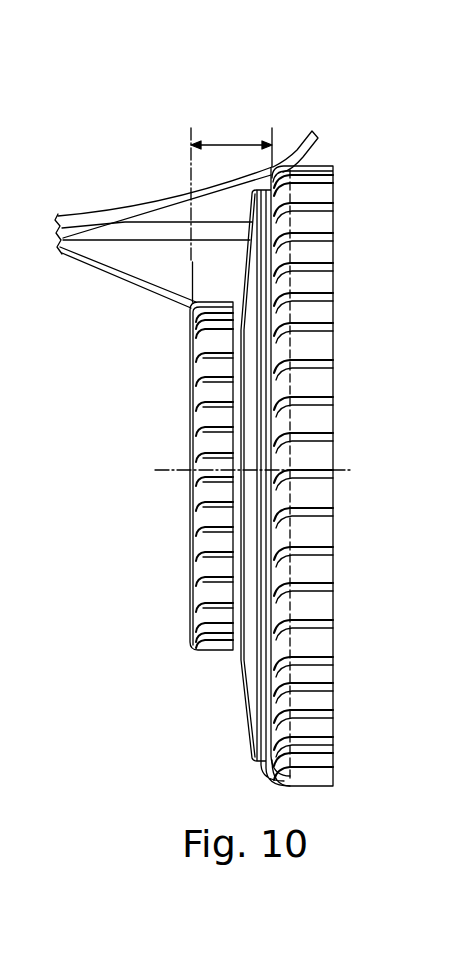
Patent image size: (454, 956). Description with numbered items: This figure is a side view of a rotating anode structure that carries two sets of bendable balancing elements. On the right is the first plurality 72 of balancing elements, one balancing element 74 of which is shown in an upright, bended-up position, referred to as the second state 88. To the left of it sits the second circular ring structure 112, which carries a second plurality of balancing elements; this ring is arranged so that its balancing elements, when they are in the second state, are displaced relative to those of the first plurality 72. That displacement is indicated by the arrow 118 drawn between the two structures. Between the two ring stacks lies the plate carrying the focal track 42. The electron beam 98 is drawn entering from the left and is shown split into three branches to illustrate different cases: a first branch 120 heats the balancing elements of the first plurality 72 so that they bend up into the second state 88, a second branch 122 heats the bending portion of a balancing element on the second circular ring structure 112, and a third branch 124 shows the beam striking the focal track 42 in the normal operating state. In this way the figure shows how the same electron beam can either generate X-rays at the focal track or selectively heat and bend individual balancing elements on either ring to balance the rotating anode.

The focal track 42 is at (250, 232).
The first plurality of balancing elements 72 is at (342, 180).
The balancing element 74 is at (262, 203).
The second state 88 is at (291, 142).
The electron beam 98 is at (92, 213).
The second circular ring structure 112 is at (168, 362).
The displacement arrow 118 is at (230, 144).
The first branch of electron beam 120 is at (150, 201).
The second branch of electron beam 122 is at (87, 262).
The third branch of electron beam 124 is at (140, 242).